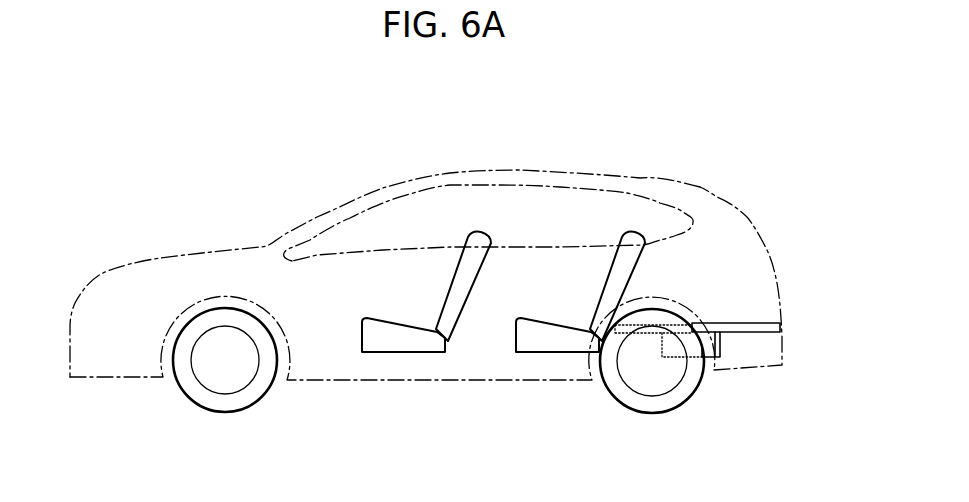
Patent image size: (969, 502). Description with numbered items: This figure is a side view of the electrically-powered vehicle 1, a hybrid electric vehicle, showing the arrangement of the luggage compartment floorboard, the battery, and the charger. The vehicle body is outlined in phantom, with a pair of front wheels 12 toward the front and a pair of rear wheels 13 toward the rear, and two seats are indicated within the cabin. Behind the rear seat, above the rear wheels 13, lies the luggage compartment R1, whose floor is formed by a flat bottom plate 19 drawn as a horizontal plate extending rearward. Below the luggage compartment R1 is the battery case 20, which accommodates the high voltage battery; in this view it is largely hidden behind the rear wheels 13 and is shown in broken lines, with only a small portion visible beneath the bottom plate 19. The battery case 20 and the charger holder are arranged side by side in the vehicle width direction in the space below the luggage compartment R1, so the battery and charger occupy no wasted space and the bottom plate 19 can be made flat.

The electrically-powered vehicle 1 is at (498, 157).
The luggage compartment R1 is at (735, 282).
The front wheels 12 is at (228, 403).
The rear wheels 13 is at (655, 405).
The bottom plate 19 is at (757, 323).
The battery case 20 is at (717, 340).